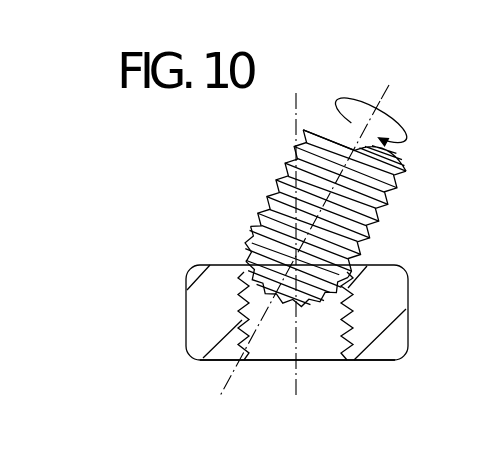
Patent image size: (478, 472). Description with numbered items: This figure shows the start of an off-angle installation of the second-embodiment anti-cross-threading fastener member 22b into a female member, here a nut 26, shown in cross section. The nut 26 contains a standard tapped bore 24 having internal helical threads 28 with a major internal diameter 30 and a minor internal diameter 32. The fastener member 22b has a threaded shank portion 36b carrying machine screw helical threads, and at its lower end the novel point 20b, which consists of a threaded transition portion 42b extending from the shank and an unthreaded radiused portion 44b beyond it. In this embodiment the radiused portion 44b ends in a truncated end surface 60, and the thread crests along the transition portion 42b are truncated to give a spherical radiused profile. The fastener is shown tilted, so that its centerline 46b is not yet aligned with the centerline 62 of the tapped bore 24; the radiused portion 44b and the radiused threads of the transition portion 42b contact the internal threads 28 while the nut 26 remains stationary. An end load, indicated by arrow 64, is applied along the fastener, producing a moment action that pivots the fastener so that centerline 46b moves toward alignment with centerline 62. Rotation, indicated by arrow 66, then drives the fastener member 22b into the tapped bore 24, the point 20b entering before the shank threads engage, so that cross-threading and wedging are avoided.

The point 20b is at (275, 190).
The fastener member 22b is at (242, 171).
The tapped bore 24 is at (343, 361).
The nut 26 is at (398, 341).
The internal helical threads 28 is at (295, 339).
The major internal diameter 30 is at (238, 356).
The minor internal diameter 32 is at (246, 334).
The threaded shank portion 36b is at (282, 167).
The threaded transition portion 42b is at (242, 244).
The radiused portion 44b is at (244, 279).
The centerline of the fastener member 46b is at (356, 124).
The truncated end surface 60 is at (287, 297).
The centerline of the tapped bore 62 is at (296, 385).
The arrow indicating end load 64 is at (396, 78).
The arrow indicating rotation 66 is at (398, 123).